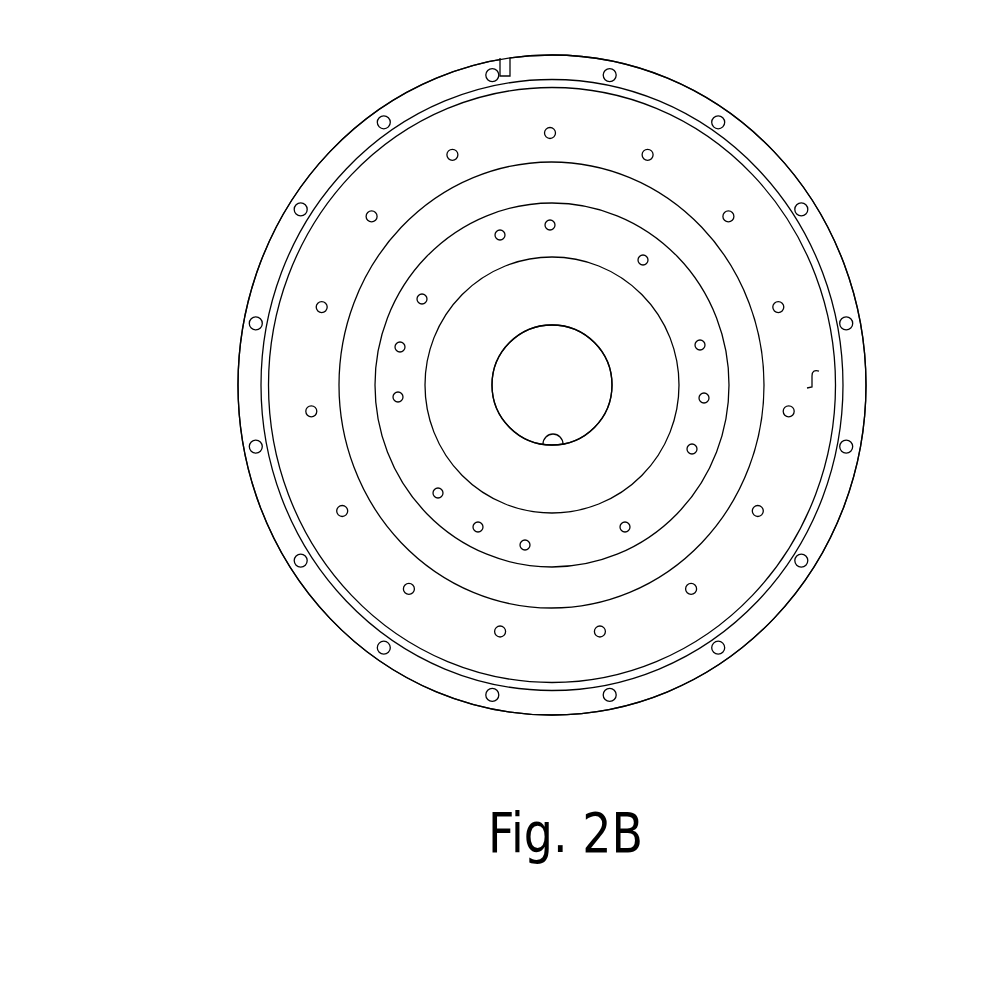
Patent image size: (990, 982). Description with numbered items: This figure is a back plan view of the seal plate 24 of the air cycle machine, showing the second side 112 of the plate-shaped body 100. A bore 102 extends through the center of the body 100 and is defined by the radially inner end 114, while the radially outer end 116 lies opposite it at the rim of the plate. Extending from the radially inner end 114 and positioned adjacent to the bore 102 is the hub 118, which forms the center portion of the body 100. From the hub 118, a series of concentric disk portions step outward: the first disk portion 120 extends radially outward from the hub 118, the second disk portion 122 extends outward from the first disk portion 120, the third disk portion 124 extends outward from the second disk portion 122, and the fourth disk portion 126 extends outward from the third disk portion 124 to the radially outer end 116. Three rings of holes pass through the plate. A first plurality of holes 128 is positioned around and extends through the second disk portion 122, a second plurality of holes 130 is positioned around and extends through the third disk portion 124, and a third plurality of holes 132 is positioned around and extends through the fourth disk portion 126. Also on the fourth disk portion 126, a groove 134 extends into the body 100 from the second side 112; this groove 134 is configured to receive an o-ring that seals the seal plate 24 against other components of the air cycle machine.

The seal plate 24 is at (184, 113).
The body 100 is at (775, 262).
The bore 102 is at (569, 378).
The second side 112 is at (814, 382).
The radially inner end 114 is at (563, 443).
The radially outer end 116 is at (874, 335).
The hub 118 is at (600, 428).
The first disk portion 120 is at (660, 415).
The second disk portion 122 is at (702, 420).
The third disk portion 124 is at (802, 450).
The fourth disk portion 126 is at (782, 592).
The first plurality of holes 128 is at (435, 497).
The second plurality of holes 130 is at (337, 513).
The third plurality of holes 132 is at (250, 448).
The groove 134 is at (650, 670).